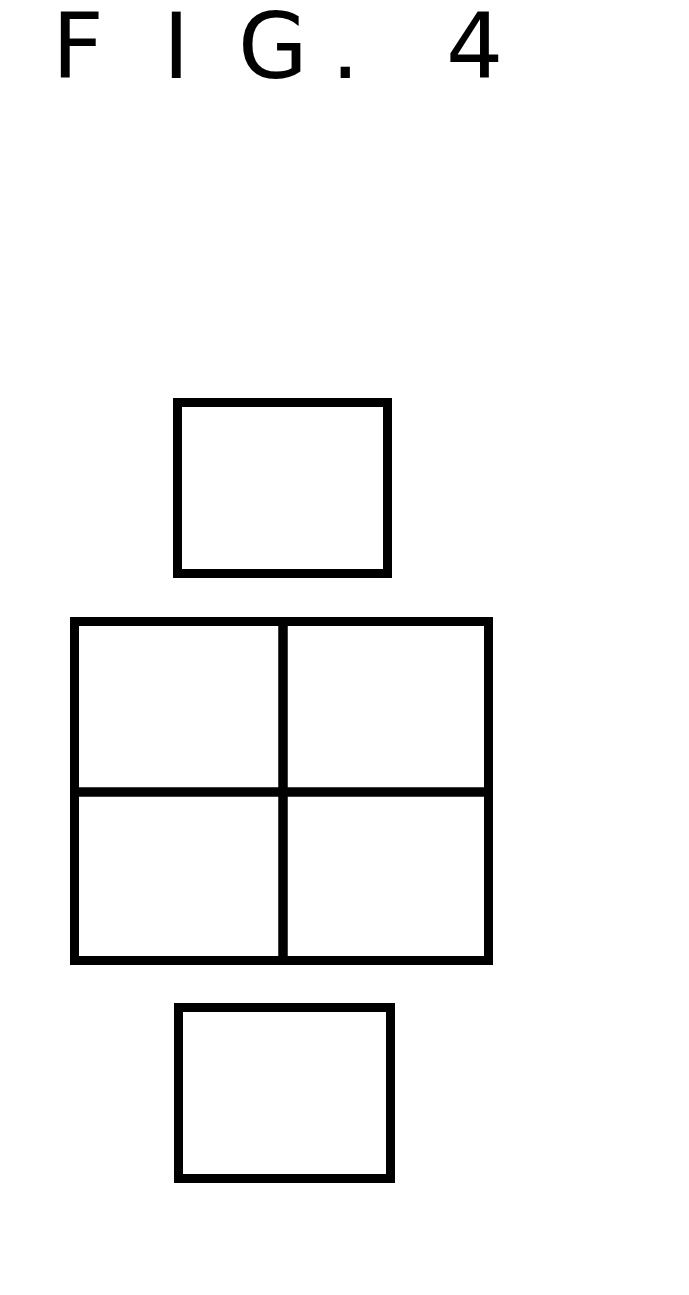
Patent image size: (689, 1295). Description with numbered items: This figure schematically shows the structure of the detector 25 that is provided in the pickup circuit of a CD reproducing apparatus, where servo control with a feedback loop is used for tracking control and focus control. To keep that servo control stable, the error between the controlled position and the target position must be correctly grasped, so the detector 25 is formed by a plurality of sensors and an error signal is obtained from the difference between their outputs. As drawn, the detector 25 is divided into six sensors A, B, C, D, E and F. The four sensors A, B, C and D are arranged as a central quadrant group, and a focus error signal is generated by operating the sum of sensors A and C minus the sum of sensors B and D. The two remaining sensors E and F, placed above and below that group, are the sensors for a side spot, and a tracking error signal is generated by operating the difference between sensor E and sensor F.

The detector 25 is at (528, 546).
The sensor A is at (179, 707).
The sensor B is at (179, 876).
The sensor C is at (386, 876).
The sensor D is at (386, 707).
The sensor E is at (283, 488).
The sensor F is at (285, 1093).